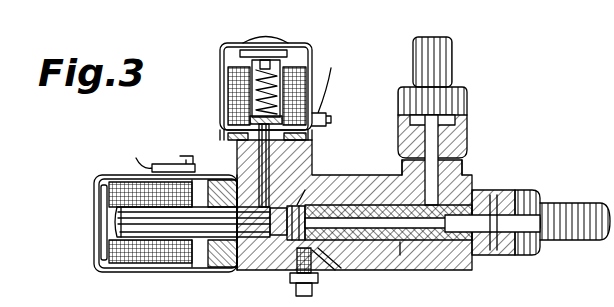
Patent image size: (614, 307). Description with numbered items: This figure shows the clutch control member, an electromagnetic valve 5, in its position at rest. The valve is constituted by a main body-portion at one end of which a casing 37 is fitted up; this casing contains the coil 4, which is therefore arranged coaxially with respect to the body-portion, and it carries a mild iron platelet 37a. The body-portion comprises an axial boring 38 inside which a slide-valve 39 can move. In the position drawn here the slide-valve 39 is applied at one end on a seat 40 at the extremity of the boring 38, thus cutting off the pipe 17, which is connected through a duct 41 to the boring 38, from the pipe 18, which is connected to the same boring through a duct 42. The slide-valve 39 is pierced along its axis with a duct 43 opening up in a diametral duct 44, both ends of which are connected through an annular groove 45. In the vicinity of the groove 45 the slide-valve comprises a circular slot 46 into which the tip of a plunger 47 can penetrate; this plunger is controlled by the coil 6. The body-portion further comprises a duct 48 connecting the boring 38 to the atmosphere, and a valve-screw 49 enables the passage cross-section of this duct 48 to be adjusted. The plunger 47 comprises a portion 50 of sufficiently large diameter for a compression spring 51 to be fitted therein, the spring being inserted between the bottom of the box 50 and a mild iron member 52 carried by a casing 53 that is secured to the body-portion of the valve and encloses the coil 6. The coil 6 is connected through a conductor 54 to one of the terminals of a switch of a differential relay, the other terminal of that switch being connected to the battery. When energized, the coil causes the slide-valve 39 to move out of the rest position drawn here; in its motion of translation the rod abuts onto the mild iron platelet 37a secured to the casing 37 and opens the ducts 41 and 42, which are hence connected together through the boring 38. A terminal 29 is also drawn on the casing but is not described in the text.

The coil 4 is at (157, 250).
The electromagnetic valve 5 is at (430, 258).
The coil 6 is at (294, 80).
The pipe 17 is at (438, 62).
The pipe 18 is at (565, 218).
The terminal 29 is at (141, 160).
The casing 37 is at (103, 272).
The mild iron platelet 37a is at (100, 235).
The axial boring 38 is at (252, 273).
The slide-valve 39 is at (390, 218).
The seat 40 is at (472, 182).
The duct 41 is at (432, 143).
The duct 42 is at (480, 223).
The duct 43 is at (407, 250).
The diametral duct 44 is at (310, 205).
The annular groove 45 is at (290, 238).
The circular slot 46 is at (300, 170).
The plunger 47 is at (258, 150).
The duct 48 is at (343, 257).
The valve-screw 49 is at (318, 272).
The portion 50 is at (252, 65).
The compression spring 51 is at (284, 75).
The mild iron member 52 is at (262, 62).
The casing 53 is at (223, 85).
The conductor 54 is at (329, 75).